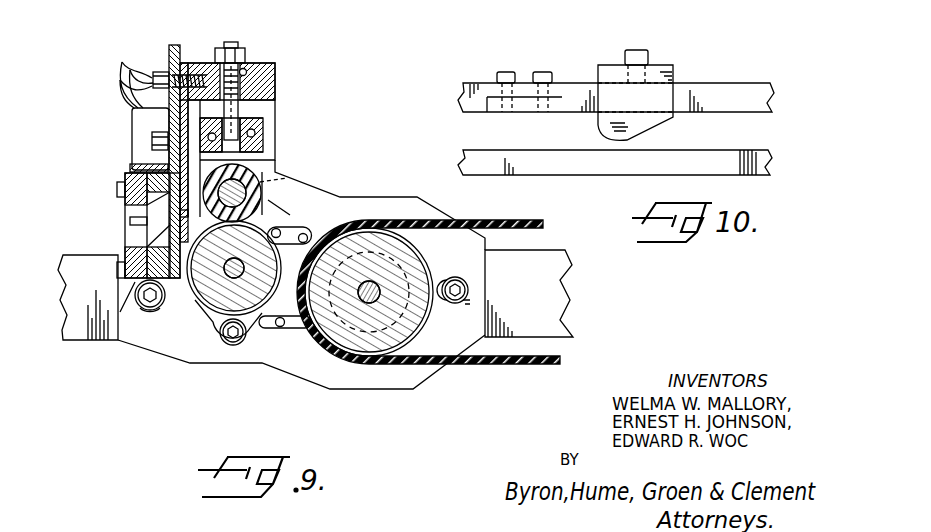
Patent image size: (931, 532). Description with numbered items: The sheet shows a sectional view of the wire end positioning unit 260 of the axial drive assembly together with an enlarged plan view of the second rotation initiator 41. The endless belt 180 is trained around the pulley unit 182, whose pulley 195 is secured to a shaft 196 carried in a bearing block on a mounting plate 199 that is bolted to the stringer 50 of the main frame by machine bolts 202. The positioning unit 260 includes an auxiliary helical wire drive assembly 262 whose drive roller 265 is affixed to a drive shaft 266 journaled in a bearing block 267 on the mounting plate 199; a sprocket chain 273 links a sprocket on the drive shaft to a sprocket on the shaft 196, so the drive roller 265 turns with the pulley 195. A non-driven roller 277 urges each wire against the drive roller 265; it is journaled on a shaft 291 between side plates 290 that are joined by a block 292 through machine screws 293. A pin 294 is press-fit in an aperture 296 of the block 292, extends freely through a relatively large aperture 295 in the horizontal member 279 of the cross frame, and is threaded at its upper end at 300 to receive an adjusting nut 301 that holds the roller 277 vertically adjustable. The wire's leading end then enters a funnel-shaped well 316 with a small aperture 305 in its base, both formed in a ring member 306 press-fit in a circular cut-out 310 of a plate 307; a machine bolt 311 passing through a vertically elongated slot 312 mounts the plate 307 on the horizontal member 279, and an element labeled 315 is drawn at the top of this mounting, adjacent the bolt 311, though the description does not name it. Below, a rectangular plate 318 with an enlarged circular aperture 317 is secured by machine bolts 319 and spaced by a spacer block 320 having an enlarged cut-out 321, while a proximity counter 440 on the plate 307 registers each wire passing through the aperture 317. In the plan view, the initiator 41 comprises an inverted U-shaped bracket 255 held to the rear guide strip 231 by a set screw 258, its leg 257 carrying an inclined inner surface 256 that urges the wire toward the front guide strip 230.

In FIG. 10, the second rotation initiator 41 is at (591, 62).
In FIG. 9, the stringer 50 is at (562, 290).
In FIG. 9, the endless belt 180 is at (510, 365).
In FIG. 9, the pulley unit 182 is at (402, 368).
In FIG. 9, the pulley 195 is at (402, 238).
In FIG. 9, the shaft 196 is at (380, 288).
In FIG. 9, the mounting plate 199 is at (253, 362).
In FIG. 9, the machine bolt 202 is at (467, 287).
In FIG. 10, the front guide strip 230 is at (760, 157).
In FIG. 10, the rear guide strip 231 is at (723, 90).
In FIG. 10, the inverted U-shaped bracket 255 is at (667, 67).
In FIG. 10, the inclined inner surface 256 is at (627, 142).
In FIG. 10, the leg 257 is at (600, 125).
In FIG. 10, the set screw 258 is at (643, 49).
In FIG. 9, the wire end positioning unit 260 is at (141, 354).
In FIG. 9, the auxiliary helical wire drive assembly 262 is at (303, 213).
In FIG. 9, the drive roller 265 is at (275, 330).
In FIG. 9, the drive shaft 266 is at (204, 320).
In FIG. 9, the bearing block 267 is at (222, 354).
In FIG. 9, the sprocket chain 273 is at (293, 228).
In FIG. 9, the non-driven roller 277 is at (260, 197).
In FIG. 9, the horizontal member 279 is at (275, 68).
In FIG. 9, the side plates 290 is at (253, 160).
In FIG. 9, the shaft 291 is at (262, 172).
In FIG. 9, the block 292 is at (262, 125).
In FIG. 9, the machine screws 293 is at (262, 138).
In FIG. 9, the pin 294 is at (273, 100).
In FIG. 9, the aperture 295 is at (246, 72).
In FIG. 9, the aperture 296 is at (197, 112).
In FIG. 9, the threaded portion 300 is at (242, 62).
In FIG. 9, the adjusting nut 301 is at (220, 46).
In FIG. 9, the aperture 305 is at (176, 226).
In FIG. 9, the ring member 306 is at (140, 197).
In FIG. 9, the plate 307 is at (163, 128).
In FIG. 9, the circular cut-out 310 is at (150, 222).
In FIG. 9, the machine bolt 311 is at (158, 72).
In FIG. 9, the vertically elongated slot 312 is at (170, 70).
In FIG. 9, the plate 315 is at (186, 62).
In FIG. 9, the funnel-shaped well 316 is at (234, 268).
In FIG. 9, the enlarged circular aperture 317 is at (125, 268).
In FIG. 9, the rectangular plate 318 is at (127, 274).
In FIG. 9, the machine bolts 319 is at (122, 178).
In FIG. 9, the spacer block 320 is at (180, 312).
In FIG. 9, the enlarged cut-out 321 is at (147, 311).
In FIG. 9, the proximity counter 440 is at (133, 130).